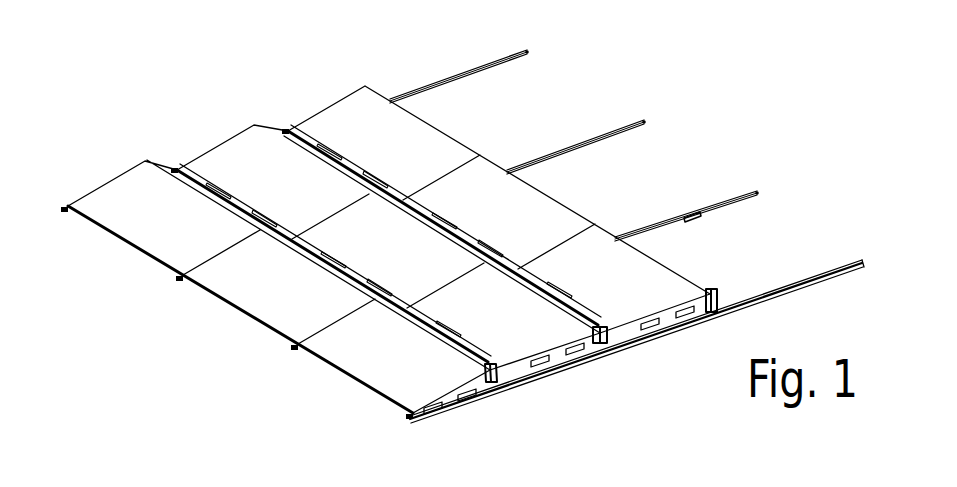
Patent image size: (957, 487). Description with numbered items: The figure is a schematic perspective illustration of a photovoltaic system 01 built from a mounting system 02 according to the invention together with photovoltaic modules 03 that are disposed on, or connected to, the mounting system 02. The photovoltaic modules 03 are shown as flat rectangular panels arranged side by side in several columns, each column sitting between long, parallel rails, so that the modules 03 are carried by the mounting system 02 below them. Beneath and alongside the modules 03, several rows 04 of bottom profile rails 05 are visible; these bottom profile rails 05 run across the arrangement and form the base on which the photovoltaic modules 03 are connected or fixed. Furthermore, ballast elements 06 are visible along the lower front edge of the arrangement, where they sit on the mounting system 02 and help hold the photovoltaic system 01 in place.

The photovoltaic system 01 is at (658, 65).
The mounting system 02 is at (630, 360).
The photovoltaic modules 03 is at (130, 234).
The rows 04 is at (527, 51).
The bottom profile rails 05 is at (692, 216).
The ballast elements 06 is at (487, 392).